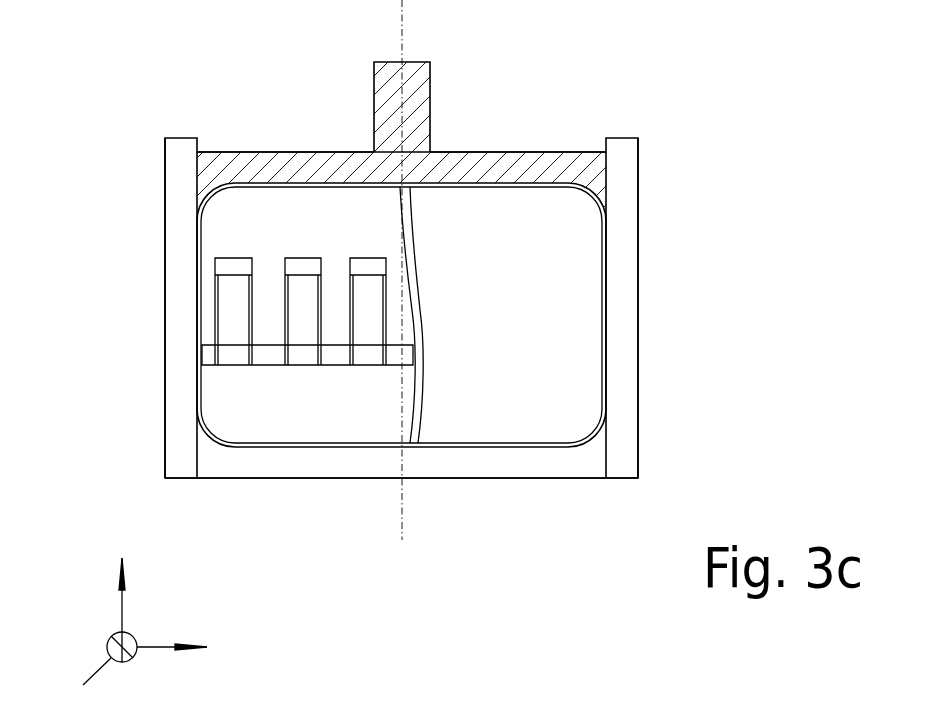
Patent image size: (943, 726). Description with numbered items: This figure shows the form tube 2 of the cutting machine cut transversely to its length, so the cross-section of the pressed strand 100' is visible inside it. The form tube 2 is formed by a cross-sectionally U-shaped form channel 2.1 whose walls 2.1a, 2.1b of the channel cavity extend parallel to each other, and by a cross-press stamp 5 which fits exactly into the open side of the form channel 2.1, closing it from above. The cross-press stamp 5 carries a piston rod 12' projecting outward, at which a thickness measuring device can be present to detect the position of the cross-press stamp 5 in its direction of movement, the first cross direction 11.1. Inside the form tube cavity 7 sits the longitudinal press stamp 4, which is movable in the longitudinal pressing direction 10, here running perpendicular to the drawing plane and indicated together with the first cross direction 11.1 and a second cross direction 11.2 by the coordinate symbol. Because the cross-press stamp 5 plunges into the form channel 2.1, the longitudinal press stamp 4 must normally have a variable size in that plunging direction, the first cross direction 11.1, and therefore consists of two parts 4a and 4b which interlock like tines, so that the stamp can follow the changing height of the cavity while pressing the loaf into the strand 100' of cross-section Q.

The form tube 2 is at (222, 93).
The form channel 2.1 is at (401, 464).
The wall of the channel cavity 2.1a is at (178, 403).
The wall of the channel cavity 2.1b is at (623, 360).
The cross-press stamp 5 is at (556, 156).
The piston rod 12' is at (436, 107).
The form tube cavity 7 is at (604, 312).
The longitudinal press stamp 4 is at (200, 310).
The part of the longitudinal press stamp 4a is at (300, 214).
The part of the longitudinal press stamp 4b is at (301, 403).
The strand 100' is at (539, 354).
The longitudinal pressing direction 10 is at (102, 675).
The first cross direction 11.1 is at (118, 618).
The horizontal axis 11.2 is at (157, 647).